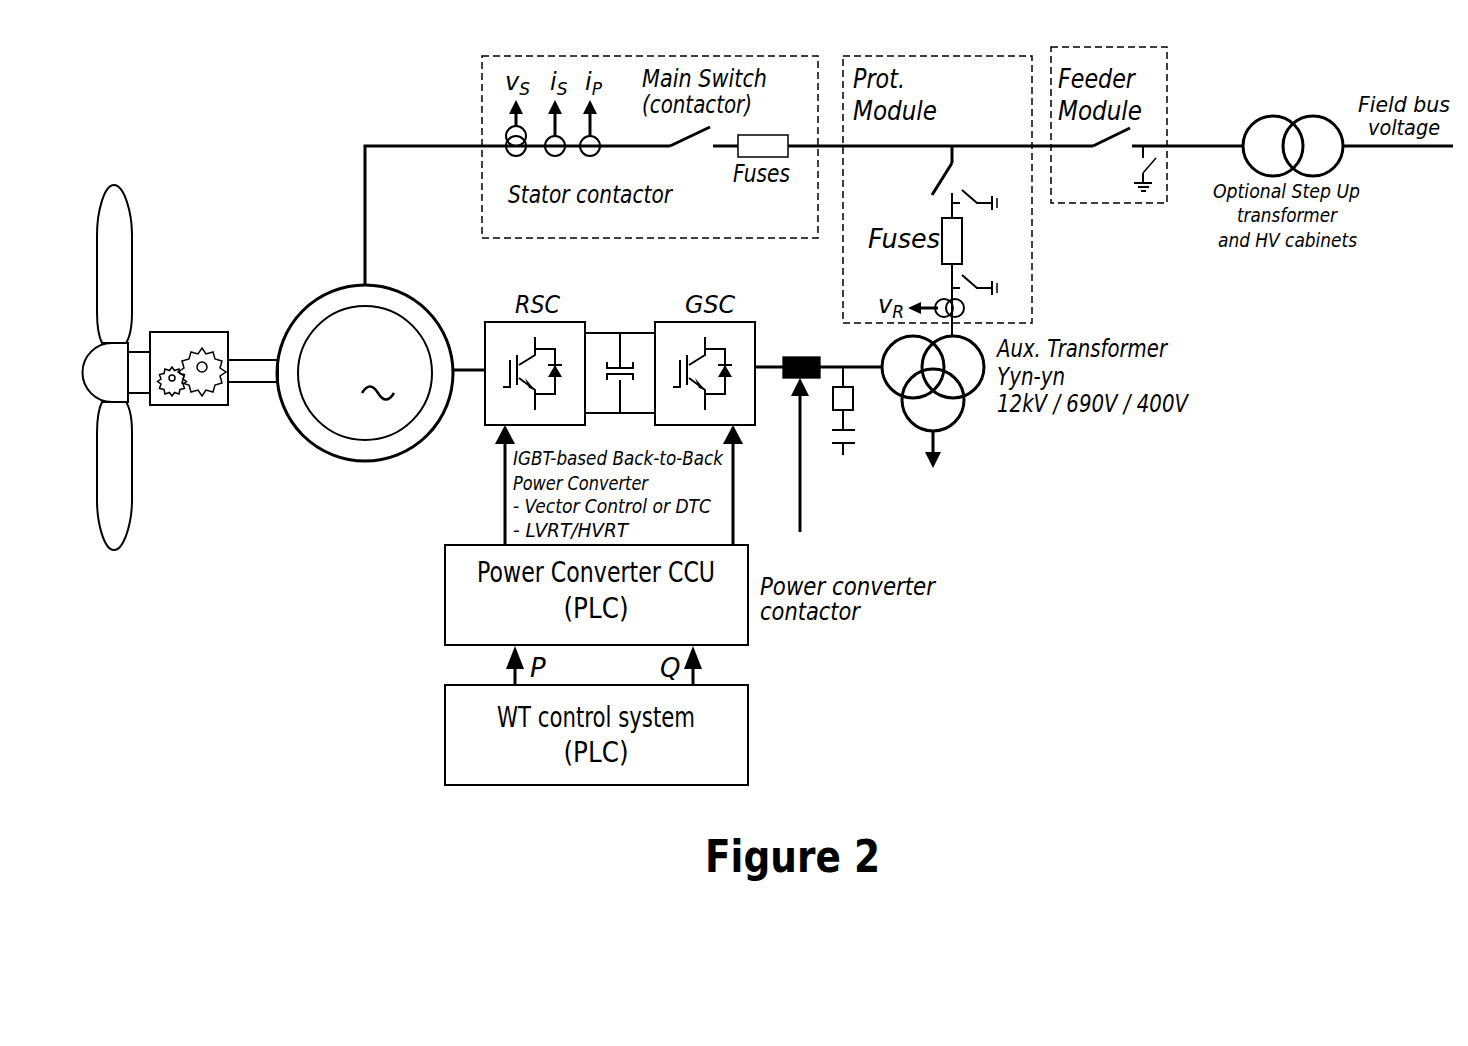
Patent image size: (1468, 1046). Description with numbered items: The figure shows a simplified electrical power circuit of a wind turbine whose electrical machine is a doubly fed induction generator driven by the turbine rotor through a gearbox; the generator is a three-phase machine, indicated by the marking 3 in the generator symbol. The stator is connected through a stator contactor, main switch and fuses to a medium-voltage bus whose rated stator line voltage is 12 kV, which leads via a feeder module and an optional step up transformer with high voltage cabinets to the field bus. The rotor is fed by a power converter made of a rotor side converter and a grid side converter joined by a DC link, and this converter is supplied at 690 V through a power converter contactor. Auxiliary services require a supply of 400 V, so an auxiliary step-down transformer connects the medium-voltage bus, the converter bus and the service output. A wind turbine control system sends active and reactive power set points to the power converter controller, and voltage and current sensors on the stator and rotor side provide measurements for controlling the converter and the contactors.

The three-phase doubly-fed induction generator (DFIG) 3 is at (365, 373).
The 12 kV medium-voltage bus with optional step-up transformer 12 is at (1292, 146).
The 690 V converter bus 690 is at (851, 350).
The 400 V service supply output 400 is at (941, 481).